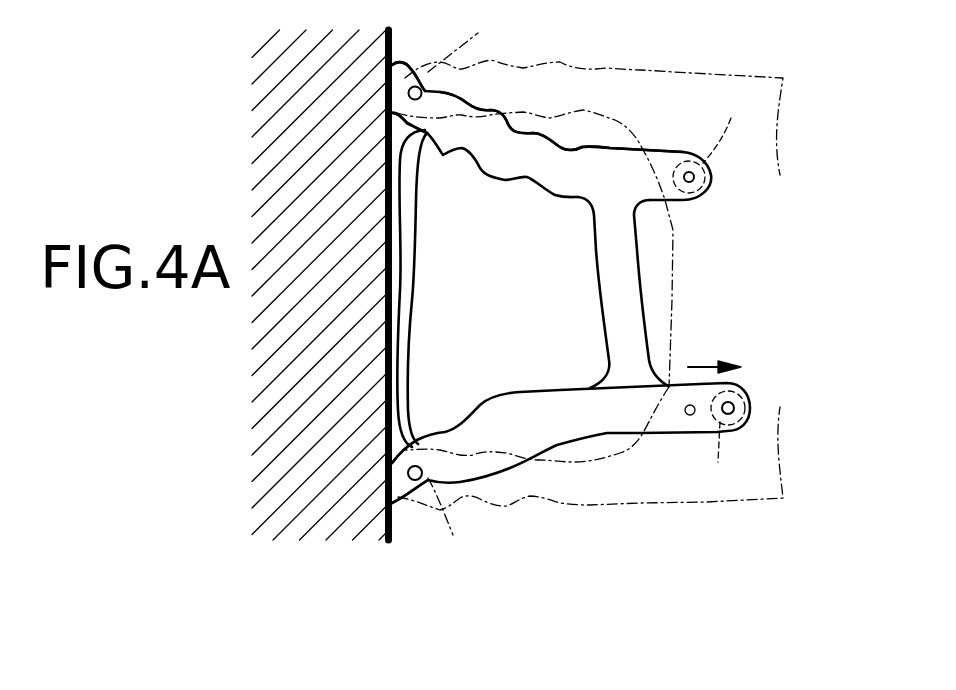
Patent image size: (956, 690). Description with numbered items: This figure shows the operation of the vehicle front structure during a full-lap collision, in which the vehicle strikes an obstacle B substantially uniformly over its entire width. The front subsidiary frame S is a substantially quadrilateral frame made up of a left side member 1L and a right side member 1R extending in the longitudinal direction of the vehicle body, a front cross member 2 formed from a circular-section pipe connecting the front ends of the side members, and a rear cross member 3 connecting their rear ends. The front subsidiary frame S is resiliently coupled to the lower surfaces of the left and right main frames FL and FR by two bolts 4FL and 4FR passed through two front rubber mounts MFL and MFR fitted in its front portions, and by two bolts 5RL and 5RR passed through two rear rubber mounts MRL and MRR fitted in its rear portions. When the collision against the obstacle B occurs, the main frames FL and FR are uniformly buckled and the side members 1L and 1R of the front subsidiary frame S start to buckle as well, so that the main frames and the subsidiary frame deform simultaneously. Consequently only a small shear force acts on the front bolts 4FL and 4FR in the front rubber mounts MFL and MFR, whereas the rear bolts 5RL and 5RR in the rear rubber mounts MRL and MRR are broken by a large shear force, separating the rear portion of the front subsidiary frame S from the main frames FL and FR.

The obstacle B is at (357, 60).
The right side member 1R is at (512, 158).
The left side member 1L is at (539, 405).
The front cross member 2 is at (412, 289).
The rear cross member 3 is at (612, 288).
The bolt 4FR is at (433, 133).
The bolt 4FL is at (428, 442).
The bolt 5RR is at (690, 178).
The bolt 5RL is at (732, 407).
The front subsidiary frame S is at (572, 147).
The right main frame FR is at (580, 78).
The left main frame FL is at (537, 487).
The front rubber mount MFR is at (493, 36).
The front rubber mount MFL is at (448, 528).
The rear rubber mount MRR is at (737, 122).
The rear rubber mount MRL is at (725, 460).